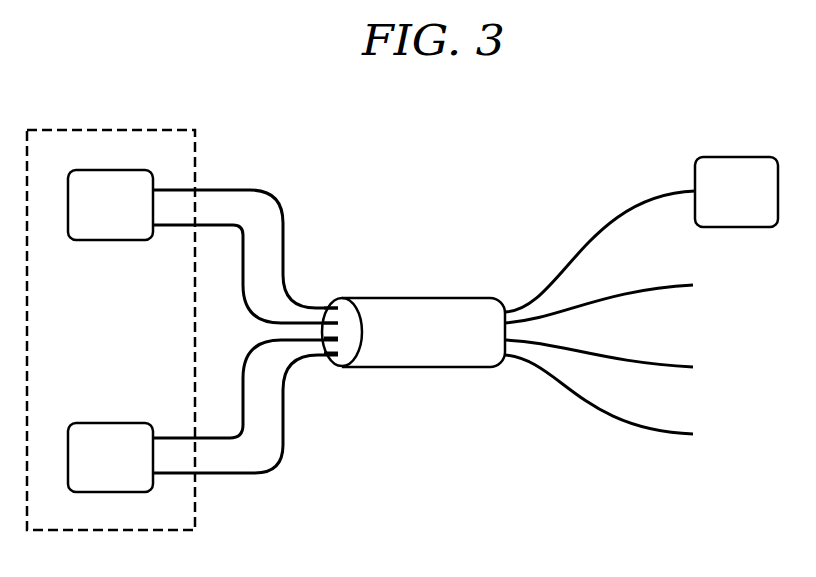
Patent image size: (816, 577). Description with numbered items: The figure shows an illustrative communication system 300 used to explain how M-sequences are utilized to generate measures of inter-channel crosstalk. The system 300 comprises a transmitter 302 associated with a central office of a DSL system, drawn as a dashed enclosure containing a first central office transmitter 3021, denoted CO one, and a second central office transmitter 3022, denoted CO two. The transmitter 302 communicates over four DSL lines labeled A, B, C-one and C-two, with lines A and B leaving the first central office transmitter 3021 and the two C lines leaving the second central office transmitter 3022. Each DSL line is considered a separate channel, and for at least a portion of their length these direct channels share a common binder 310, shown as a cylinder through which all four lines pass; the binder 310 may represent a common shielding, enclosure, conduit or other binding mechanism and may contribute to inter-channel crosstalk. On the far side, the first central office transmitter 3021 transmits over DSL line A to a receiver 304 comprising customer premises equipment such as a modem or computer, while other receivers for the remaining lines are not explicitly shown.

The communication system 300 is at (618, 102).
The transmitter 302 is at (95, 130).
The first central office transmitter 3021 is at (115, 240).
The second central office transmitter 3022 is at (113, 423).
The receiver 304 is at (735, 157).
The binder 310 is at (398, 298).